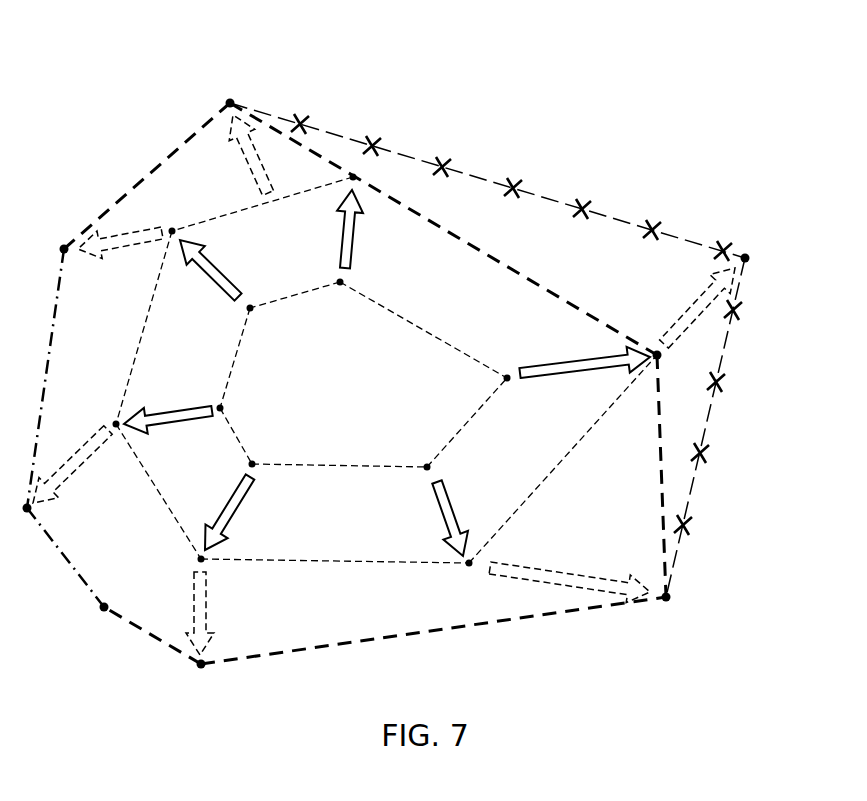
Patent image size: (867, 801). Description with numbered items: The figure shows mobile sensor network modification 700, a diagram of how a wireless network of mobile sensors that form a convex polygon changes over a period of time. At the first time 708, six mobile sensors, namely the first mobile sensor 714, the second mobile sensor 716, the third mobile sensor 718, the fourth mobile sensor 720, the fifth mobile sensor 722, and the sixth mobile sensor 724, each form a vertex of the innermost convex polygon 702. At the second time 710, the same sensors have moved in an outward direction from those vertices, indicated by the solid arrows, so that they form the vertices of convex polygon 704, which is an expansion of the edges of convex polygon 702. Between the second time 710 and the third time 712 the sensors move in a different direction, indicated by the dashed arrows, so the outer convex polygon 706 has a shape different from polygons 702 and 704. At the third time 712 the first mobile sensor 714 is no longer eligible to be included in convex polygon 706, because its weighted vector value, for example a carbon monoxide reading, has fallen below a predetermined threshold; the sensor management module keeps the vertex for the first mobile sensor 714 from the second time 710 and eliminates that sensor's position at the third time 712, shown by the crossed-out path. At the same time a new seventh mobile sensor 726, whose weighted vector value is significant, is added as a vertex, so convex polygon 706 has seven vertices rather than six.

The mobile sensor network modification 700 is at (158, 110).
The convex polygon 702 is at (422, 328).
The convex polygon 704 is at (346, 564).
The convex polygon 706 is at (436, 632).
The time T1 708 is at (363, 374).
The time T2 710 is at (471, 497).
The time T3 712 is at (113, 541).
The mobile sensor S1 714 is at (768, 240).
The mobile sensor S2 716 is at (338, 278).
The mobile sensor S3 718 is at (247, 308).
The mobile sensor S4 720 is at (223, 410).
The mobile sensor S5 722 is at (249, 465).
The mobile sensor S6 724 is at (425, 470).
The mobile sensor S7 726 is at (102, 612).